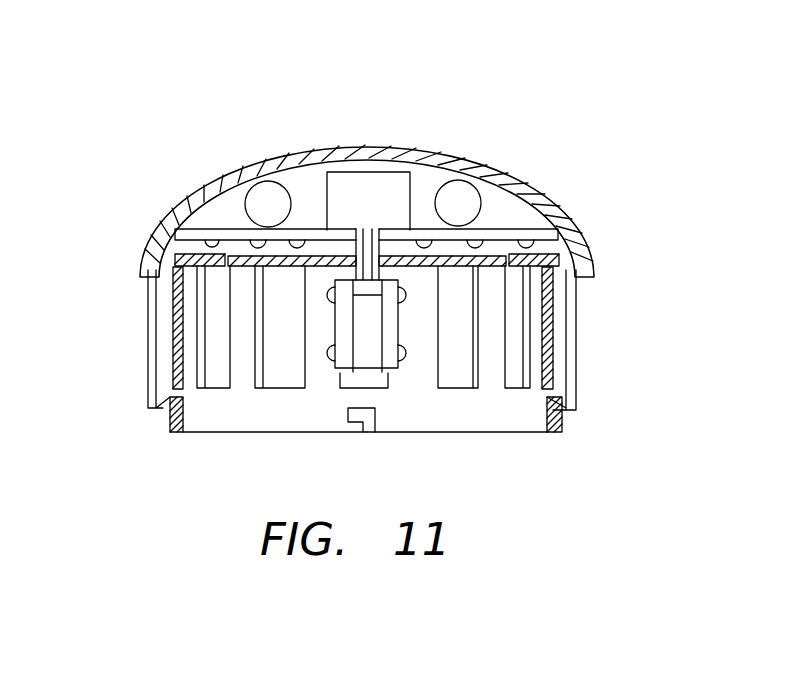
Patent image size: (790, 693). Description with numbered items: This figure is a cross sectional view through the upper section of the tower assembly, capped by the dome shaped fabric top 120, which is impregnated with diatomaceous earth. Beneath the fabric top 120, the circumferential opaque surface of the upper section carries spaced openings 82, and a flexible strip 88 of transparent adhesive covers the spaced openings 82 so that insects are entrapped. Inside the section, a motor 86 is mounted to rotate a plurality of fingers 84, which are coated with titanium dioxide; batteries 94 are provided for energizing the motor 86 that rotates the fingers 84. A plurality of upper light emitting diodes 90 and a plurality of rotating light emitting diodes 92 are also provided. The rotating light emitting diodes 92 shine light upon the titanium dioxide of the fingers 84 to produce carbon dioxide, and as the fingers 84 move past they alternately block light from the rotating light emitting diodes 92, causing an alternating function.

The spaced openings 82 is at (160, 322).
The fingers 84 is at (273, 378).
The motor 86 is at (370, 188).
The flexible strip 88 is at (578, 340).
The upper light emitting diodes 90 is at (550, 277).
The rotating light emitting diodes 92 is at (407, 300).
The batteries 94 is at (278, 192).
The fabric top 120 is at (257, 160).